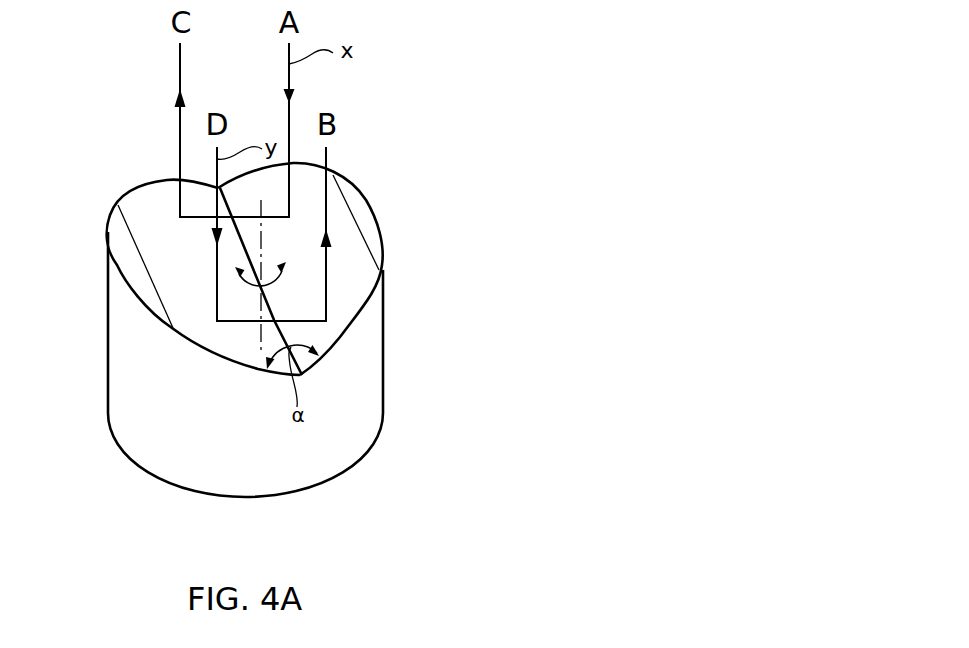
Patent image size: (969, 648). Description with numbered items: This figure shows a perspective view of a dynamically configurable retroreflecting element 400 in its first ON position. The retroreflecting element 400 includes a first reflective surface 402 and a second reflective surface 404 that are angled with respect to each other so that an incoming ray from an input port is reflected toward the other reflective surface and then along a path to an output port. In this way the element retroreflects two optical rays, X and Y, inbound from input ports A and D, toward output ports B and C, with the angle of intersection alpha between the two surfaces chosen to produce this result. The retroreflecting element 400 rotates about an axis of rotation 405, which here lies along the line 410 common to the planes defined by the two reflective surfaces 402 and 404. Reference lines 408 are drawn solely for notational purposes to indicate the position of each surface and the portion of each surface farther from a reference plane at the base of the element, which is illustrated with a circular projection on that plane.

The dynamically configurable retroreflecting element 400 is at (553, 154).
The first reflective surface 402 is at (340, 303).
The second reflective surface 404 is at (198, 320).
The axis of rotation 405 is at (260, 332).
The reference lines 408 is at (148, 272).
The line common to the planes 410 is at (255, 257).